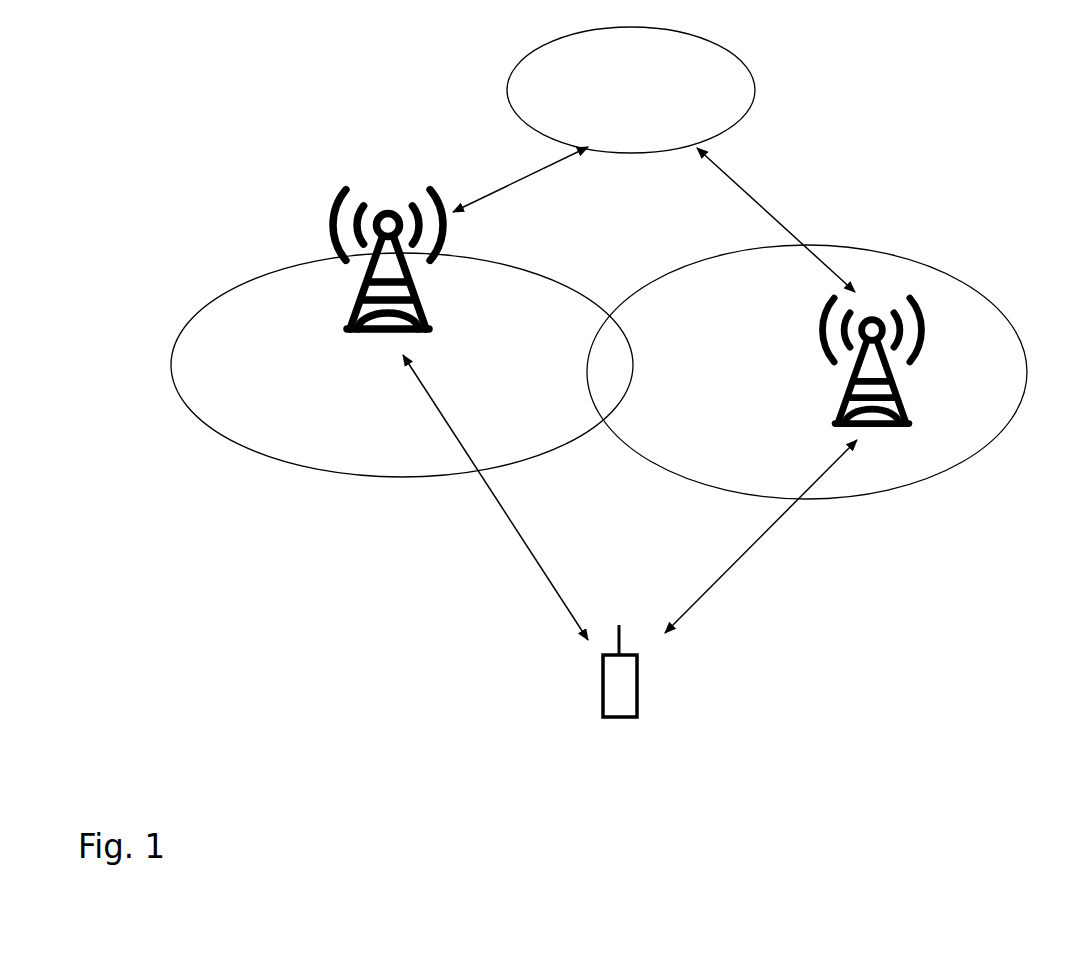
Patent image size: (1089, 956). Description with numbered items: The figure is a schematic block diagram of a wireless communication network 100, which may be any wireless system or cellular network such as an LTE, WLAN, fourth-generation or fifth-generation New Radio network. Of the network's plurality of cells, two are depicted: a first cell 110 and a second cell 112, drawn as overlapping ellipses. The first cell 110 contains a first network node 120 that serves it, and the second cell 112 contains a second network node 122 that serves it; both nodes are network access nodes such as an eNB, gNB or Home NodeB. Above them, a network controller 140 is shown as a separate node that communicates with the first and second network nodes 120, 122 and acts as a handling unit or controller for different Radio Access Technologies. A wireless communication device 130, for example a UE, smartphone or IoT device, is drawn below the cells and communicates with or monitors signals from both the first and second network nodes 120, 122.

The wireless communication network 100 is at (888, 722).
The first cell 110 is at (893, 472).
The second cell 112 is at (237, 307).
The first network node 120 is at (890, 393).
The second network node 122 is at (355, 315).
The wireless communication device 130 is at (617, 680).
The network controller 140 is at (631, 90).